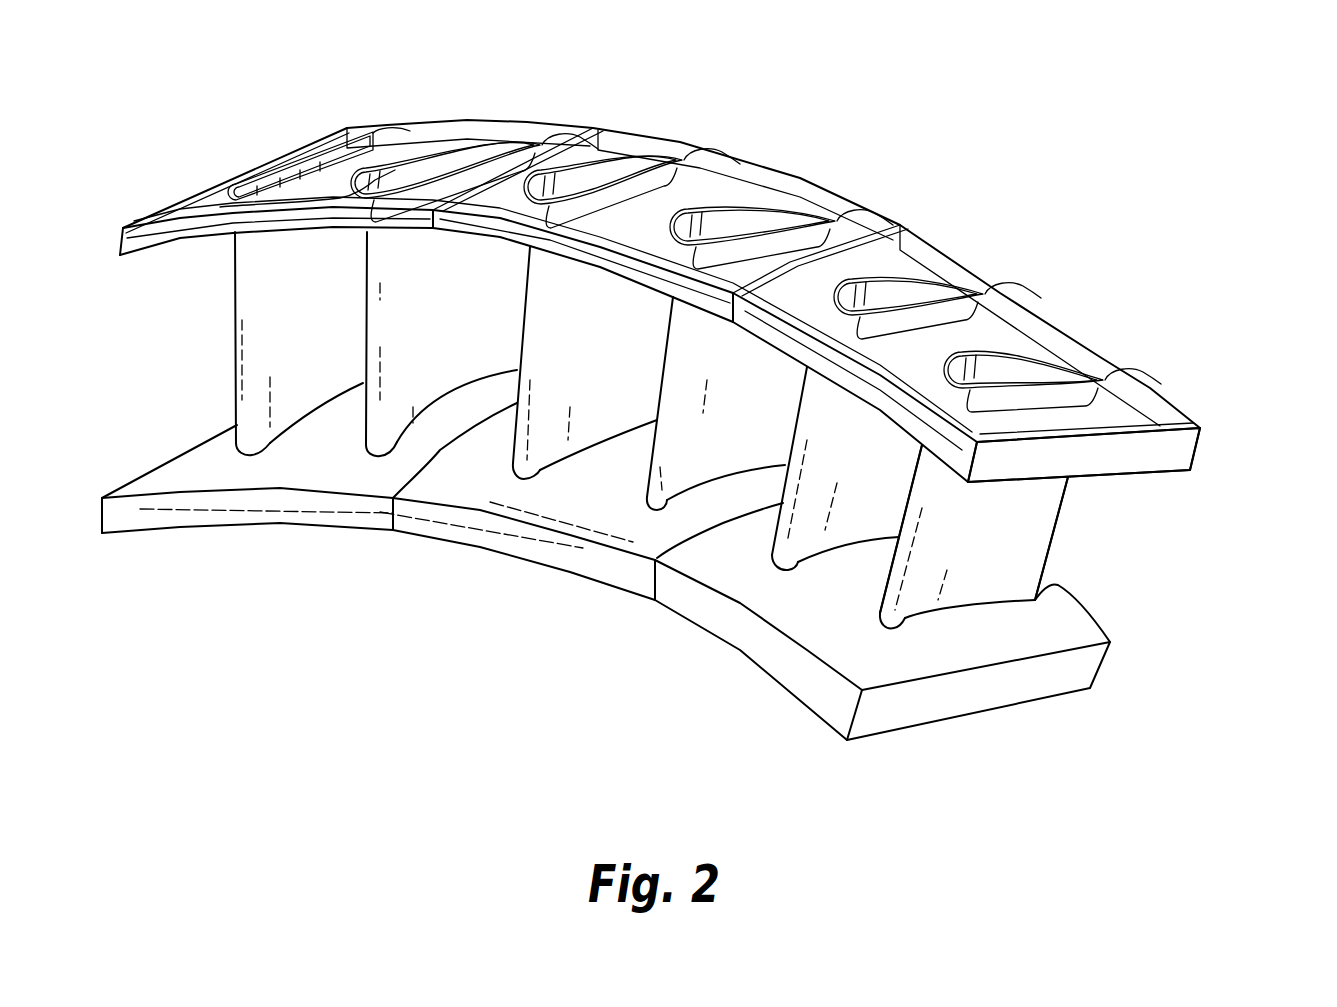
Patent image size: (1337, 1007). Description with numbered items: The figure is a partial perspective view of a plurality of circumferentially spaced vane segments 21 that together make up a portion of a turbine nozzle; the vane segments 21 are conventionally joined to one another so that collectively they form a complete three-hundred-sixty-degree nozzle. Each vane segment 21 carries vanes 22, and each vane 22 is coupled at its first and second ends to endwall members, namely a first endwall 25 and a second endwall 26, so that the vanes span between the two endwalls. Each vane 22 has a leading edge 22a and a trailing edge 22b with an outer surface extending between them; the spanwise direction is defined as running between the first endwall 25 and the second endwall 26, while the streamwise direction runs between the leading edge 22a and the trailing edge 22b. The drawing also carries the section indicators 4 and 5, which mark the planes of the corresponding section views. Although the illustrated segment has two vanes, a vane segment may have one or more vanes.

The vane segment 21 is at (1000, 277).
The vane 22 is at (1007, 513).
The leading edge 22a is at (893, 573).
The trailing edge 22b is at (1053, 547).
The first endwall 25 is at (1037, 677).
The second endwall 26 is at (1173, 448).
The section line 4- 4 is at (727, 615).
The section line 5- 5 is at (773, 225).